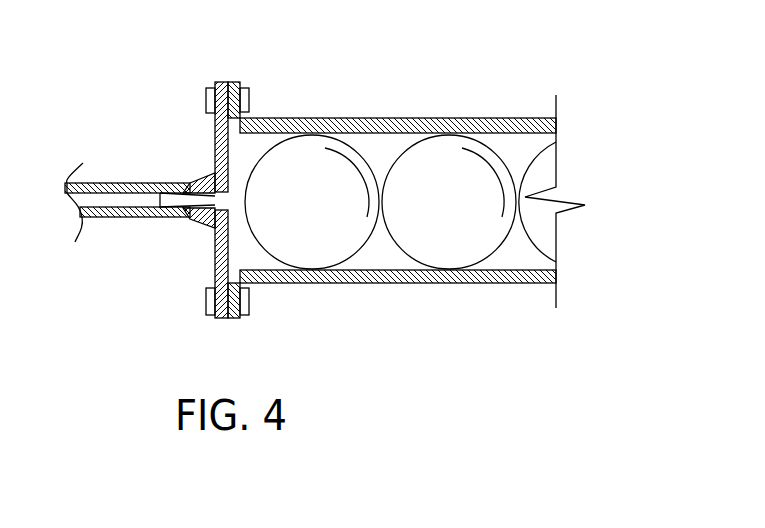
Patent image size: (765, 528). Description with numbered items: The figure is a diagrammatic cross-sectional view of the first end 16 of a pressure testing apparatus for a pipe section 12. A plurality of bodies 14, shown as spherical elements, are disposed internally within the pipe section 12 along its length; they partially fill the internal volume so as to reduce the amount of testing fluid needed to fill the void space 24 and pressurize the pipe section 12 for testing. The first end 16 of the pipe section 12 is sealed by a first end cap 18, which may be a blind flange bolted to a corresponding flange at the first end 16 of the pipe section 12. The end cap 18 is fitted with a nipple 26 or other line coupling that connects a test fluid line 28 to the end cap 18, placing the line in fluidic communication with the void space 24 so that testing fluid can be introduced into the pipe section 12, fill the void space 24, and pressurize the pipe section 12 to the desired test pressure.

The pipe section 12 is at (480, 283).
The bodies 14 is at (433, 252).
The first end 16 is at (367, 118).
The first end cap 18 is at (213, 143).
The void space 24 is at (545, 138).
The nipple 26 is at (207, 225).
The test fluid line 28 is at (110, 218).